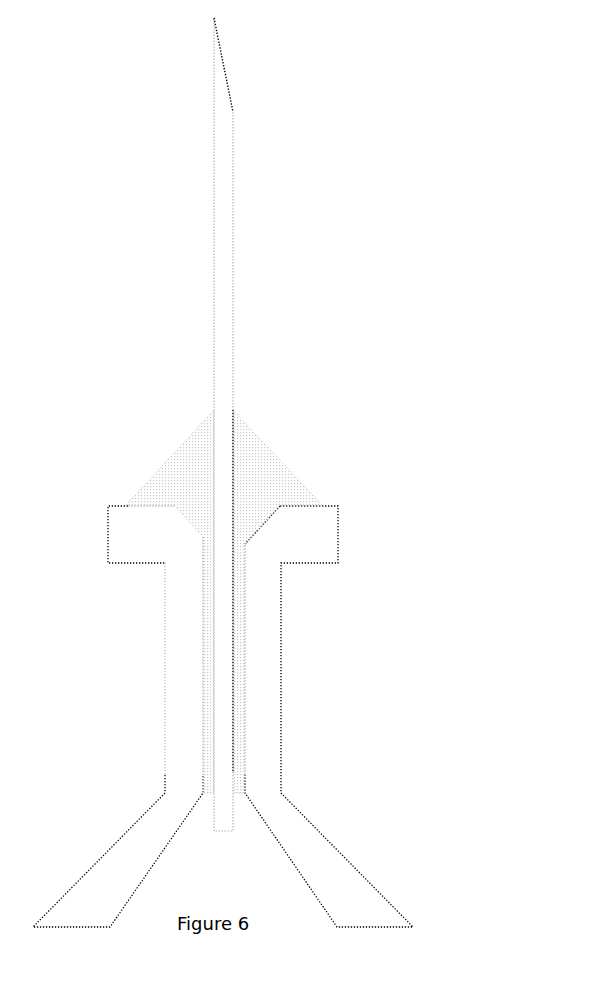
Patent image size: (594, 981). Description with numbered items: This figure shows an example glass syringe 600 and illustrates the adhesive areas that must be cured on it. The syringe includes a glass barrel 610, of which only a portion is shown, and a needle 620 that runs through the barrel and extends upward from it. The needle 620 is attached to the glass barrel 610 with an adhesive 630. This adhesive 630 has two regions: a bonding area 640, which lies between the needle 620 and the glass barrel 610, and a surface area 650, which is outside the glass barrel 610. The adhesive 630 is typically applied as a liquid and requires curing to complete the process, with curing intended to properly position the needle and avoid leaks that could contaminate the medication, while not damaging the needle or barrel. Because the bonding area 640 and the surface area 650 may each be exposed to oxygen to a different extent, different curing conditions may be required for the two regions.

The glass syringe 600 is at (498, 203).
The glass barrel 610 is at (281, 679).
The needle 620 is at (233, 232).
The adhesive 630 is at (277, 452).
The bonding area 640 is at (162, 462).
The surface area 650 is at (192, 532).